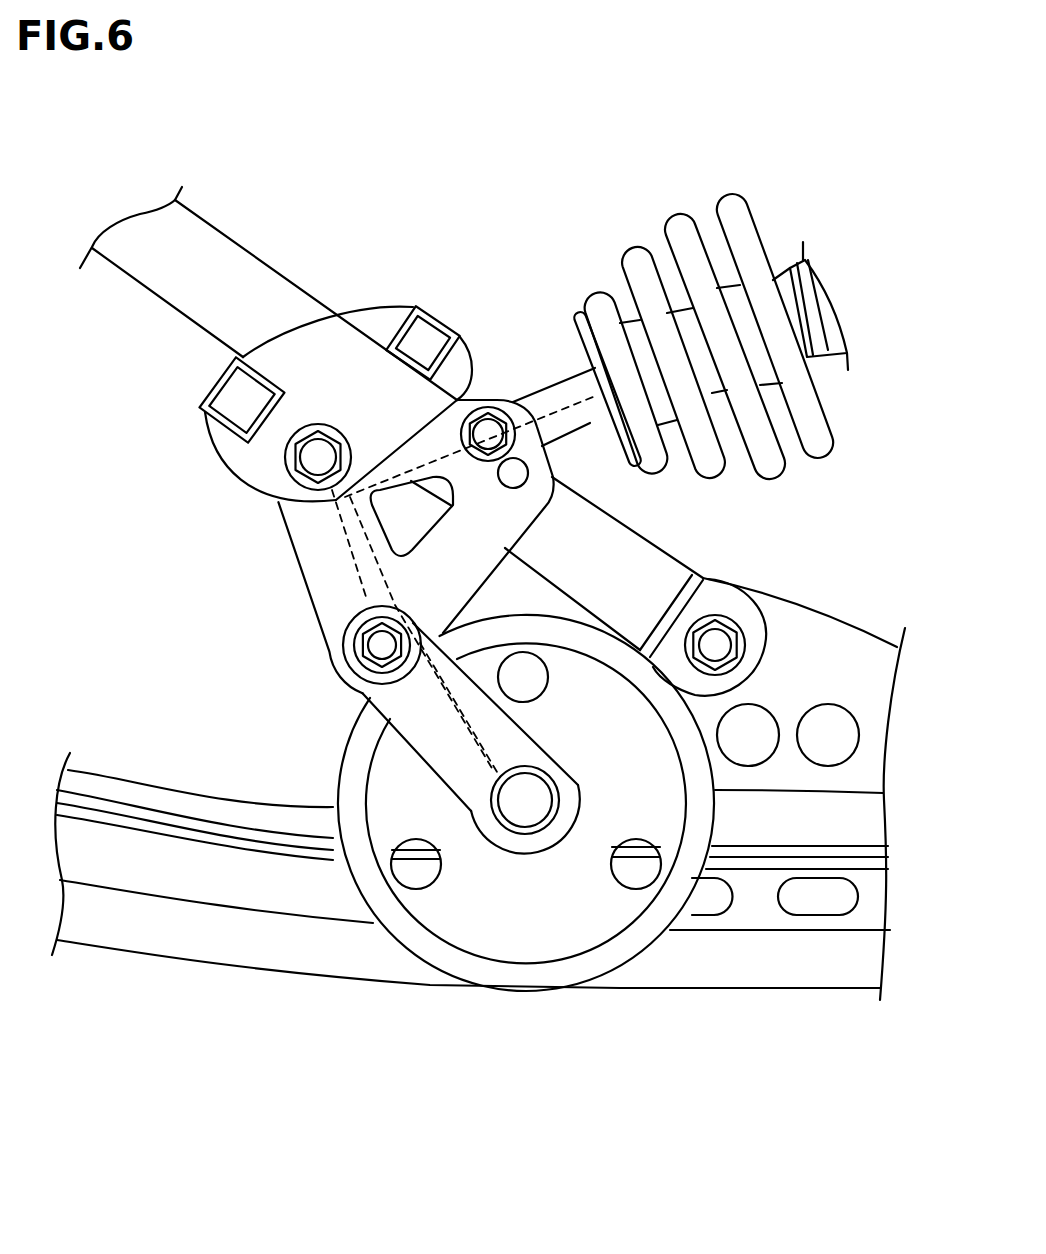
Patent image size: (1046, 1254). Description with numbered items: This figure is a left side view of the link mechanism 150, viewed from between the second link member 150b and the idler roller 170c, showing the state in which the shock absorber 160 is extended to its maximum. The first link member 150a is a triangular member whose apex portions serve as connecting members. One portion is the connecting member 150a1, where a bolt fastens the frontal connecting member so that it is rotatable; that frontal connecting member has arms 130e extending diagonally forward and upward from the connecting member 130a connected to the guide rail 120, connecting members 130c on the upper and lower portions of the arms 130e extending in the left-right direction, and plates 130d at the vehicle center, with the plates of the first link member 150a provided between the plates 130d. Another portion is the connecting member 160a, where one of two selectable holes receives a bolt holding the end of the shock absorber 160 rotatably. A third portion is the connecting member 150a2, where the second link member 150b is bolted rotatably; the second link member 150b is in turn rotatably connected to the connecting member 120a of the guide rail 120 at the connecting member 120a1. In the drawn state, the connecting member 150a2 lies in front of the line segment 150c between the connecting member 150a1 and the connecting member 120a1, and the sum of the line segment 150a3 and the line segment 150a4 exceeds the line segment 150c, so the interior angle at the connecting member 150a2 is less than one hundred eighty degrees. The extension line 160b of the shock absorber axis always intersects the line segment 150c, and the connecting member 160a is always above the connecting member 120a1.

The guide rail 120 is at (735, 990).
The connecting member 120a is at (470, 910).
The connecting member 120a1 is at (503, 828).
The connecting member 130a is at (720, 630).
The connecting member 130c is at (422, 306).
The plate 130d is at (212, 428).
The arm 130e is at (258, 255).
The link mechanism 150 is at (147, 578).
The first link member 150a is at (308, 568).
The connecting member 150a1 is at (308, 463).
The connecting member 150a2 is at (373, 687).
The line segment 150a3 is at (333, 533).
The line segment 150a4 is at (510, 712).
The second link member 150b is at (367, 690).
The line segment 150c is at (500, 697).
The shock absorber 160 is at (690, 312).
The connecting member 160a is at (490, 424).
The extension line 160b is at (569, 400).
The idler roller 170c is at (600, 960).